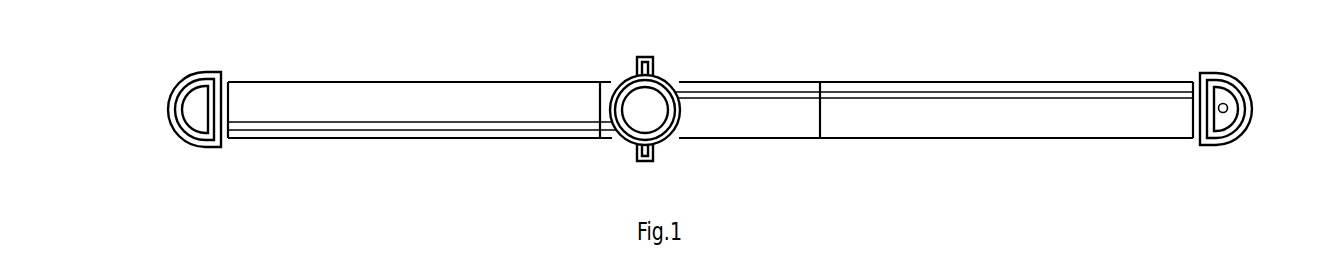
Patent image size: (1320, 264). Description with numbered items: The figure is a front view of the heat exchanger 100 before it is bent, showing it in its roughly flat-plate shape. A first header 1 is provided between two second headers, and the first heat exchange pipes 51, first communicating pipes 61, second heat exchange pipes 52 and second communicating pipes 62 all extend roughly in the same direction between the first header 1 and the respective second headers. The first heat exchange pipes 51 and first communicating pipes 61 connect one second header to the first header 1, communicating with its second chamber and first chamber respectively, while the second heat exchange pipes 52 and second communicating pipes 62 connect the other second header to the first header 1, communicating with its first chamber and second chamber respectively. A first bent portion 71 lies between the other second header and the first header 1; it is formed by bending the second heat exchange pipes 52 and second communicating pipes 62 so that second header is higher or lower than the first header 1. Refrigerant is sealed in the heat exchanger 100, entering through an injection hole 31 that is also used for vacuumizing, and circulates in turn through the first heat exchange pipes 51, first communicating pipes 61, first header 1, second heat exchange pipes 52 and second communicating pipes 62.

The heat exchanger 100 is at (1260, 65).
The first header 1 is at (647, 108).
The injection hole 31 is at (1223, 115).
The first heat exchange pipes 51 is at (423, 108).
The second heat exchange pipes 52 is at (725, 125).
The first communicating pipes 61 is at (312, 135).
The second communicating pipes 62 is at (693, 86).
The first bent portion 71 is at (778, 152).